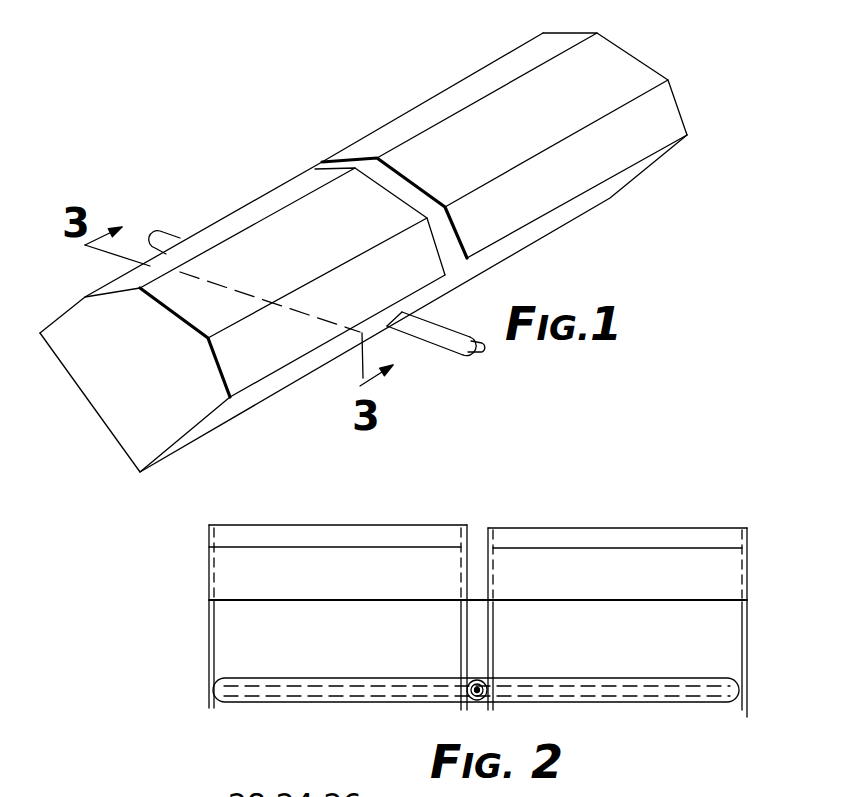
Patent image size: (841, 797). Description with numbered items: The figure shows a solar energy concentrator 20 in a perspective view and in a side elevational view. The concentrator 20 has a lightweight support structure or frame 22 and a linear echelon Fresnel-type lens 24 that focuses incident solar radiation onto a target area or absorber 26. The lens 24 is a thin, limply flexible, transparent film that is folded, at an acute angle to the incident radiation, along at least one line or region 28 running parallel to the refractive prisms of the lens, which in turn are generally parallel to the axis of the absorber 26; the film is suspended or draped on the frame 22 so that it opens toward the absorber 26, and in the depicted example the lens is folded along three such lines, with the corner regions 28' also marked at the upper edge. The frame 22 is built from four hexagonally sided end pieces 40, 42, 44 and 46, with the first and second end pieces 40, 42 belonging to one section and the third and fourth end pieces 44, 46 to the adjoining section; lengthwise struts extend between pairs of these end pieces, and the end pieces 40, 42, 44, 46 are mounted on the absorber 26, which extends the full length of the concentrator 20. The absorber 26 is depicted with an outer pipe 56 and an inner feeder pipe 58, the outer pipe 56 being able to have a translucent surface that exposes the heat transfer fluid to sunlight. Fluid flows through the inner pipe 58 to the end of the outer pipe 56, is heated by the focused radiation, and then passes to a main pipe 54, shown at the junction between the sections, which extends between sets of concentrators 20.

In FIG. 1, the solar energy concentrator 20 is at (253, 186).
In FIG. 2, the solar energy concentrator 20 is at (377, 520).
In FIG. 1, the support structure or frame 22 is at (98, 405).
In FIG. 2, the support structure or frame 22 is at (208, 627).
In FIG. 1, the linear echelon Fresnel-type lens 24 is at (480, 115).
In FIG. 2, the linear echelon Fresnel-type lens 24 is at (633, 532).
In FIG. 2, the target area or absorber 26 is at (348, 703).
In FIG. 1, the fold line or region 28 is at (626, 29).
In FIG. 1, the upper edge corner 28' is at (604, 44).
In FIG. 1, the end piece 40 is at (132, 437).
In FIG. 2, the end piece 40 is at (208, 557).
In FIG. 1, the end piece 42 is at (388, 188).
In FIG. 2, the end piece 42 is at (472, 528).
In FIG. 1, the end piece 44 is at (416, 192).
In FIG. 2, the end piece 44 is at (487, 530).
In FIG. 2, the end piece 46 is at (747, 547).
In FIG. 1, the main pipe 54 is at (458, 338).
In FIG. 2, the main pipe 54 is at (480, 683).
In FIG. 2, the outer pipe 56 is at (313, 703).
In FIG. 2, the inner feeder pipe 58 is at (273, 693).